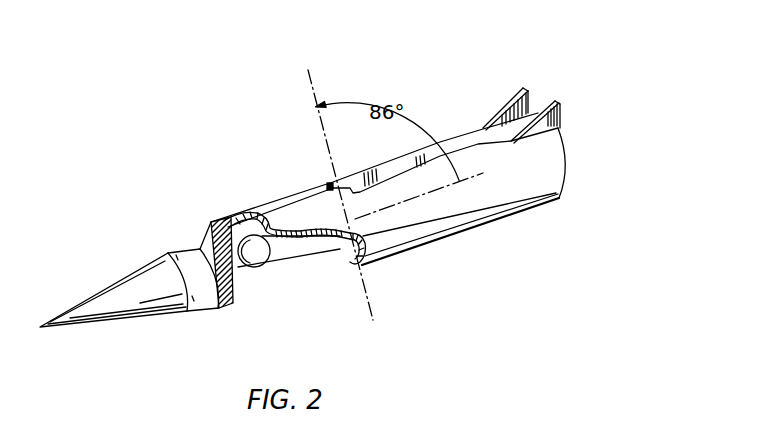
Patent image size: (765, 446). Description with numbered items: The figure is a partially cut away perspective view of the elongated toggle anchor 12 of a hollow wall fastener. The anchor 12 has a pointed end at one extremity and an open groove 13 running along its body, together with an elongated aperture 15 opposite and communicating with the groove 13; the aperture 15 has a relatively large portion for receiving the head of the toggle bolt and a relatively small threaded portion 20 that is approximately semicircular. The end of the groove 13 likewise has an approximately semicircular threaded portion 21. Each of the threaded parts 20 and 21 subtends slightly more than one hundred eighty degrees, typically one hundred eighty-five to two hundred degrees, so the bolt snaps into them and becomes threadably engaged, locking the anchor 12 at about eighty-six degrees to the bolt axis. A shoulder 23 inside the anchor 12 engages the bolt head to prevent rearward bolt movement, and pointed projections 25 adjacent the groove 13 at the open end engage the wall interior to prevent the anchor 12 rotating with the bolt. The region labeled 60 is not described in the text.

The toggle anchor 12 is at (488, 222).
The open groove 13 is at (472, 146).
The elongated aperture 15 is at (277, 283).
The threaded portion 20 is at (350, 256).
The threaded portion 21 is at (328, 190).
The shoulder 23 is at (289, 252).
The pointed projections 25 is at (527, 90).
The collar 60 is at (188, 309).